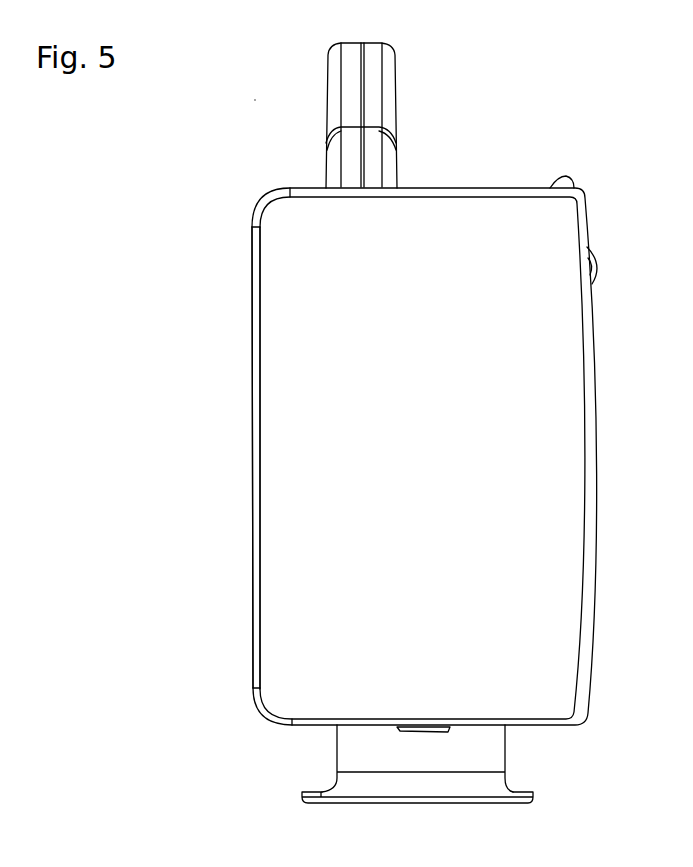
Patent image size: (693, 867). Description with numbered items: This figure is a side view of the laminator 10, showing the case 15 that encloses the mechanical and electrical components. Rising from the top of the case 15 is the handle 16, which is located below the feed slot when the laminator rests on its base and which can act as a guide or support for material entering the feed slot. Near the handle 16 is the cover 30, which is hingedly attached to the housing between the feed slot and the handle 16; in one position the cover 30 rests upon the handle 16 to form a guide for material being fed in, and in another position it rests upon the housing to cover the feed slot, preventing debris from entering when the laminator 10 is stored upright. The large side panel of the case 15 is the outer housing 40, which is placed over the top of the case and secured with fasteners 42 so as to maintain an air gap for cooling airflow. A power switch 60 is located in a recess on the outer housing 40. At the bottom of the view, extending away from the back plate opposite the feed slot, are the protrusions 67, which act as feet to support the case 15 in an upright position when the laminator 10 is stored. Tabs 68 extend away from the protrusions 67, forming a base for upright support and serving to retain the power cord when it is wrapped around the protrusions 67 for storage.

The laminator 10 is at (253, 98).
The case 15 is at (266, 194).
The handle 16 is at (368, 63).
The cover 30 is at (566, 176).
The outer housing 40 is at (272, 325).
The fasteners 42 is at (597, 262).
The power switch 60 is at (598, 283).
The protrusions 67 is at (497, 745).
The tabs 68 is at (530, 797).